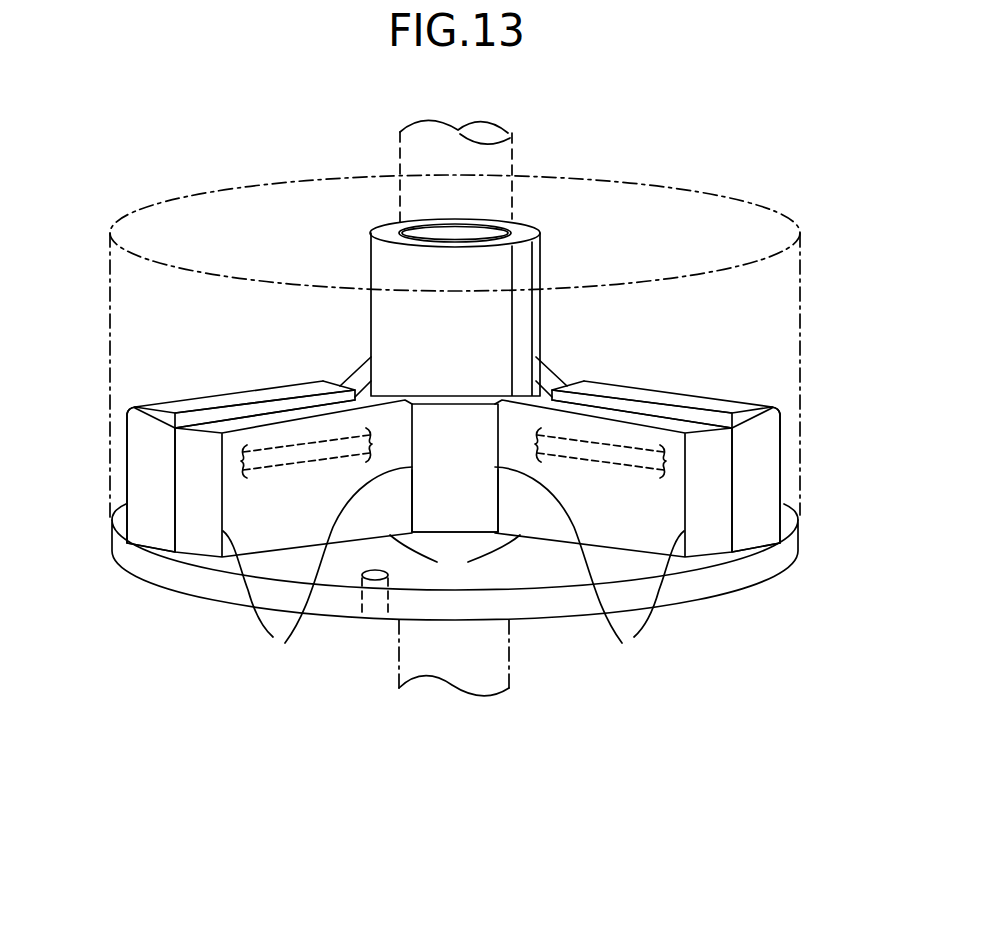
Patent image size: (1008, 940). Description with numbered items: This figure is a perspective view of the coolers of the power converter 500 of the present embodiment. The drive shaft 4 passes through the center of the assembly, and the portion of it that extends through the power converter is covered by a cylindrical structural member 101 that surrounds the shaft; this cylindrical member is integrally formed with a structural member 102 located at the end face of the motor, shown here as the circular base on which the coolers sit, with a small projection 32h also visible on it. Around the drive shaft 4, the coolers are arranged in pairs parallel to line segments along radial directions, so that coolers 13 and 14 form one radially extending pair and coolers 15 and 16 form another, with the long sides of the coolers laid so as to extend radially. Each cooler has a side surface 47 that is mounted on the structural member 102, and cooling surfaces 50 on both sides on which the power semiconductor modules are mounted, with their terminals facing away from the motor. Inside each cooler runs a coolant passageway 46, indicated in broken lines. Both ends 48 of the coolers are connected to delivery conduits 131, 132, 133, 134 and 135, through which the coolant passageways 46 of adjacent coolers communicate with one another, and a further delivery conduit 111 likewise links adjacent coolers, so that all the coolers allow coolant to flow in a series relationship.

The drive shaft 4 is at (505, 158).
The power converter 500 is at (676, 150).
The cylindrical structural member 101 is at (523, 233).
The delivery conduit 111 is at (387, 262).
The cooler 13 is at (173, 401).
The cooler 14 is at (252, 420).
The delivery conduit 133 is at (355, 382).
The delivery conduit 134 is at (451, 412).
The delivery conduit 135 is at (543, 380).
The cooler 15 is at (654, 418).
The cooler 16 is at (733, 403).
The delivery conduit 131 is at (138, 440).
The delivery conduit 132 is at (770, 445).
The coolant passageway 46 is at (275, 465).
The cooling surface 50 is at (520, 506).
The side surface 47 is at (455, 562).
The end 48 is at (453, 567).
The positioning pin 32h is at (375, 580).
The structural member 102 is at (550, 576).